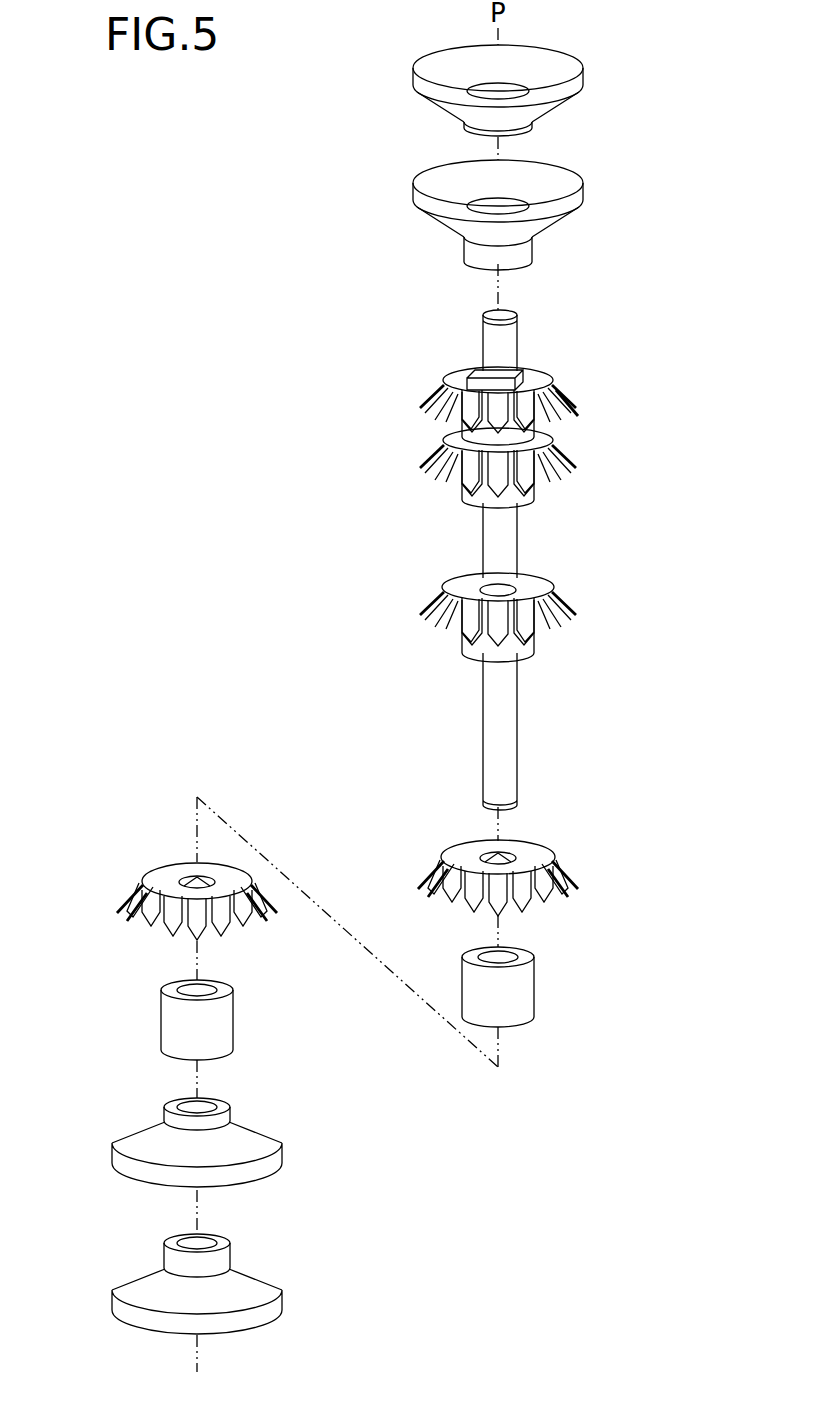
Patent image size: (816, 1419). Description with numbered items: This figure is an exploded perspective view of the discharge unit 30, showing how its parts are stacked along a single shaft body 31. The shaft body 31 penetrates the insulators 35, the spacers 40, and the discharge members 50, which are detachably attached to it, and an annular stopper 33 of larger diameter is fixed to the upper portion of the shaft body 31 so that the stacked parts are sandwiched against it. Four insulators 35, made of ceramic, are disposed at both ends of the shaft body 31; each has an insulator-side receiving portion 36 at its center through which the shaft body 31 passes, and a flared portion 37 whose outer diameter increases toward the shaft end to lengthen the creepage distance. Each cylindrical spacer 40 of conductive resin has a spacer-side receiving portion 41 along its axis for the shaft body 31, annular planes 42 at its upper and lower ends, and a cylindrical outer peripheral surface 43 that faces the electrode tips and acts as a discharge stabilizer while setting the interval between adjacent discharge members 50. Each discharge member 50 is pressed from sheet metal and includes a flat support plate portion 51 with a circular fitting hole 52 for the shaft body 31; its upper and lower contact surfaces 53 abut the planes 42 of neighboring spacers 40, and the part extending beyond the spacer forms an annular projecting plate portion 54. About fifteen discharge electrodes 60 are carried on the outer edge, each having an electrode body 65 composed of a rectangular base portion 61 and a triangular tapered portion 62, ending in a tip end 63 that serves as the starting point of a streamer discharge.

The discharge unit 30 is at (627, 288).
The shaft body 31 is at (518, 540).
The stopper 33 is at (520, 378).
The insulator 35 is at (316, 689).
The insulator-side receiving portion 36 is at (513, 135).
The flared portion 37 is at (530, 124).
The spacer 40 is at (346, 733).
The spacer-side receiving portion 41 is at (460, 954).
The plane 42 is at (524, 1022).
The outer peripheral surface 43 is at (472, 990).
The discharge member 50 is at (337, 651).
The support plate portion 51 is at (556, 378).
The fitting hole 52 is at (538, 580).
The contact surface 53 is at (475, 594).
The projecting plate portion 54 is at (465, 378).
The discharge electrode 60 is at (565, 408).
The base portion 61 is at (544, 455).
The tapered portion 62 is at (550, 470).
The tip end 63 is at (548, 482).
The electrode body 65 is at (501, 472).